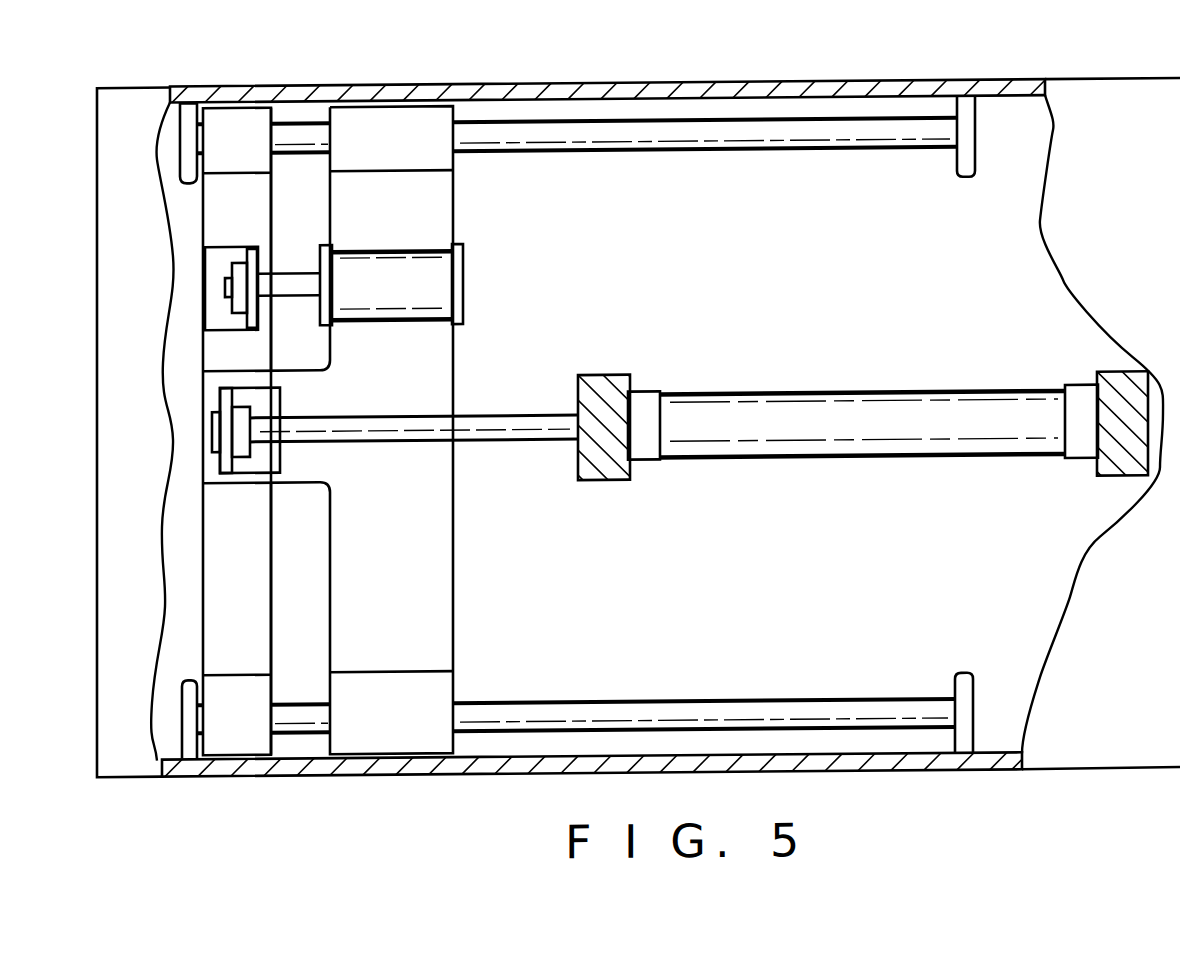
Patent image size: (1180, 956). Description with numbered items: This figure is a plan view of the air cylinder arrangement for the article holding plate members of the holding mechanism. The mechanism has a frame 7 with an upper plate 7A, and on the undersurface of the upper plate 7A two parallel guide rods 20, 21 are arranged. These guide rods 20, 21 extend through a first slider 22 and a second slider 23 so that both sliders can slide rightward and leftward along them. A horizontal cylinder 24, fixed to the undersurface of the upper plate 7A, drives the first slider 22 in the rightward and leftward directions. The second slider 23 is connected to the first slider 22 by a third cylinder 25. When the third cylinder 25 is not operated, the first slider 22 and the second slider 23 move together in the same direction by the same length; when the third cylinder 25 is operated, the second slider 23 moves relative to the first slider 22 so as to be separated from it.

The frame 7 is at (1004, 88).
The upper plate 7A is at (1092, 102).
The guide rod 20 is at (805, 714).
The guide rod 21 is at (838, 142).
The first slider 22 is at (427, 634).
The second slider 23 is at (277, 736).
The horizontal cylinder 24 is at (777, 452).
The third cylinder 25 is at (430, 287).